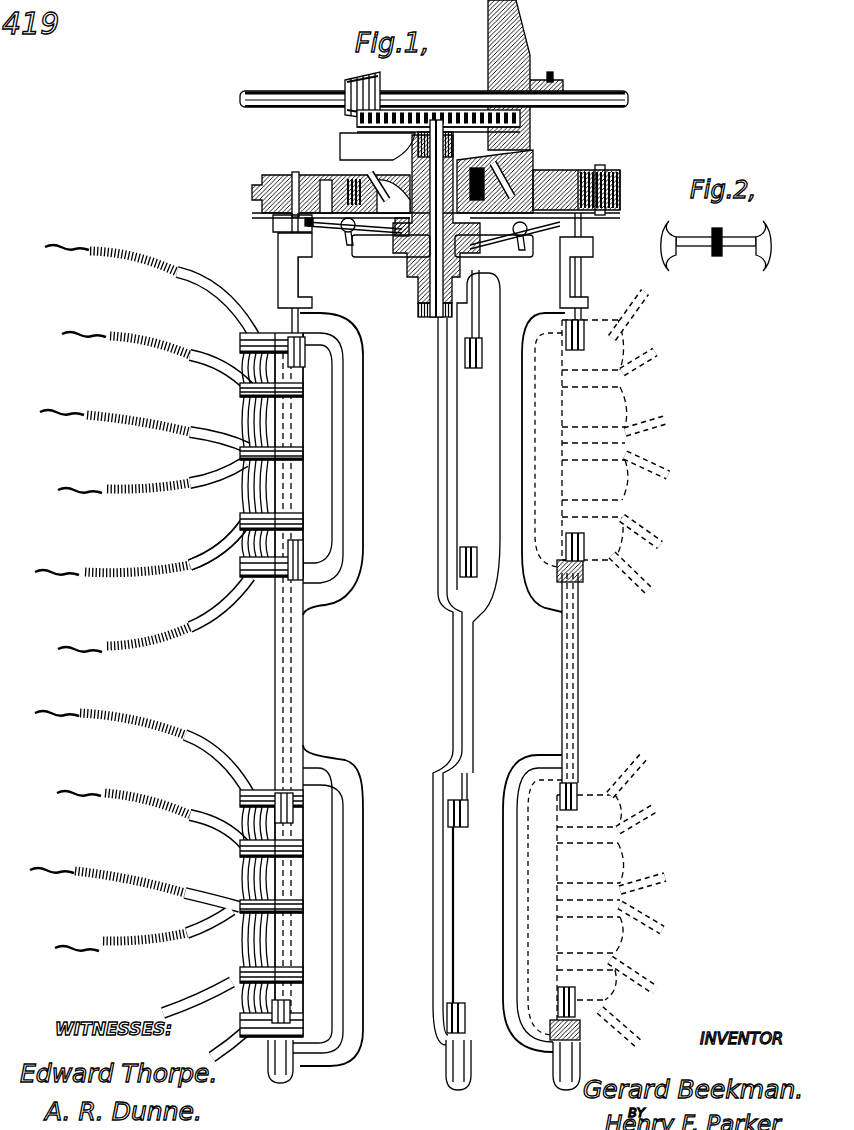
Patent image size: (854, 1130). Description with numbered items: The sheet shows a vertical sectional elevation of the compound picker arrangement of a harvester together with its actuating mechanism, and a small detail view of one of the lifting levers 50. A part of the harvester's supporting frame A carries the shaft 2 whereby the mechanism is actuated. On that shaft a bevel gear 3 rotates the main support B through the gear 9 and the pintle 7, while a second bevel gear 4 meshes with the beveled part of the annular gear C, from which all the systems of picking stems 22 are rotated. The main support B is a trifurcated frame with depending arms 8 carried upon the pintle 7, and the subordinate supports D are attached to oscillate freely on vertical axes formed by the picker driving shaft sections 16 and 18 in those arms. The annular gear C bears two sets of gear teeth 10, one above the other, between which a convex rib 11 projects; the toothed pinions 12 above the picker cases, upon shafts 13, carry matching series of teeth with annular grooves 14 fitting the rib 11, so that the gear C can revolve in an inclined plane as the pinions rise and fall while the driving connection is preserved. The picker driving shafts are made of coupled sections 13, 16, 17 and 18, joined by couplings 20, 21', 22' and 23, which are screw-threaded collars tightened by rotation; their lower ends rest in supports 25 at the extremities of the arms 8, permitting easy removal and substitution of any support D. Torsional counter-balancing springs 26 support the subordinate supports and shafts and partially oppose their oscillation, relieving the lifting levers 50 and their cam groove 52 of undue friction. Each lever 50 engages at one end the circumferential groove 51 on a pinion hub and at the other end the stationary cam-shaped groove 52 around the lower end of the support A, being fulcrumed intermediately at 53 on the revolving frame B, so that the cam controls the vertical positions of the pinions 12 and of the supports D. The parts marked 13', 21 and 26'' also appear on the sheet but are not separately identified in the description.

In FIG. 1, the shaft 2 is at (434, 91).
In FIG. 1, the bevel gear 3 is at (359, 88).
In FIG. 1, the bevel gear 4 is at (525, 75).
In FIG. 1, the pintle 7 is at (428, 293).
In FIG. 1, the depending arms 8 is at (500, 448).
In FIG. 1, the gear 9 is at (438, 133).
In FIG. 1, the gear teeth 10 is at (560, 220).
In FIG. 1, the convex rib 11 is at (265, 188).
In FIG. 1, the toothed pinions 12 is at (450, 183).
In FIG. 1, the shafts 13 is at (435, 273).
In FIG. 1, the wedge piece 13' is at (371, 180).
In FIG. 1, the annular grooves 14 is at (620, 190).
In FIG. 1, the picker driving shaft section 16 is at (303, 423).
In FIG. 1, the picker driving shaft section 17 is at (303, 688).
In FIG. 1, the picker driving shaft section 18 is at (308, 877).
In FIG. 1, the coupling 20 is at (596, 333).
In FIG. 1, the coupling block 21 is at (307, 557).
In FIG. 1, the coupling 21' is at (536, 555).
In FIG. 1, the picking stems 22 is at (68, 589).
In FIG. 1, the coupling 22' is at (441, 888).
In FIG. 1, the coupling 23 is at (586, 995).
In FIG. 1, the supports 25 is at (327, 670).
In FIG. 1, the springs 26 is at (389, 664).
In FIG. 1, the arm tube 26'' is at (216, 539).
In FIG. 1, the lifting levers 50 is at (480, 235).
In FIG. 2, the lifting levers 50 is at (716, 245).
In FIG. 1, the circumferential grooves 51 is at (299, 235).
In FIG. 1, the cam-shaped groove 52 is at (397, 240).
In FIG. 1, the fulcrum 53 is at (437, 238).
In FIG. 1, the supporting frame A is at (377, 146).
In FIG. 1, the main support B is at (430, 272).
In FIG. 1, the annular gear C is at (495, 181).
In FIG. 1, the subordinate supports D is at (454, 668).